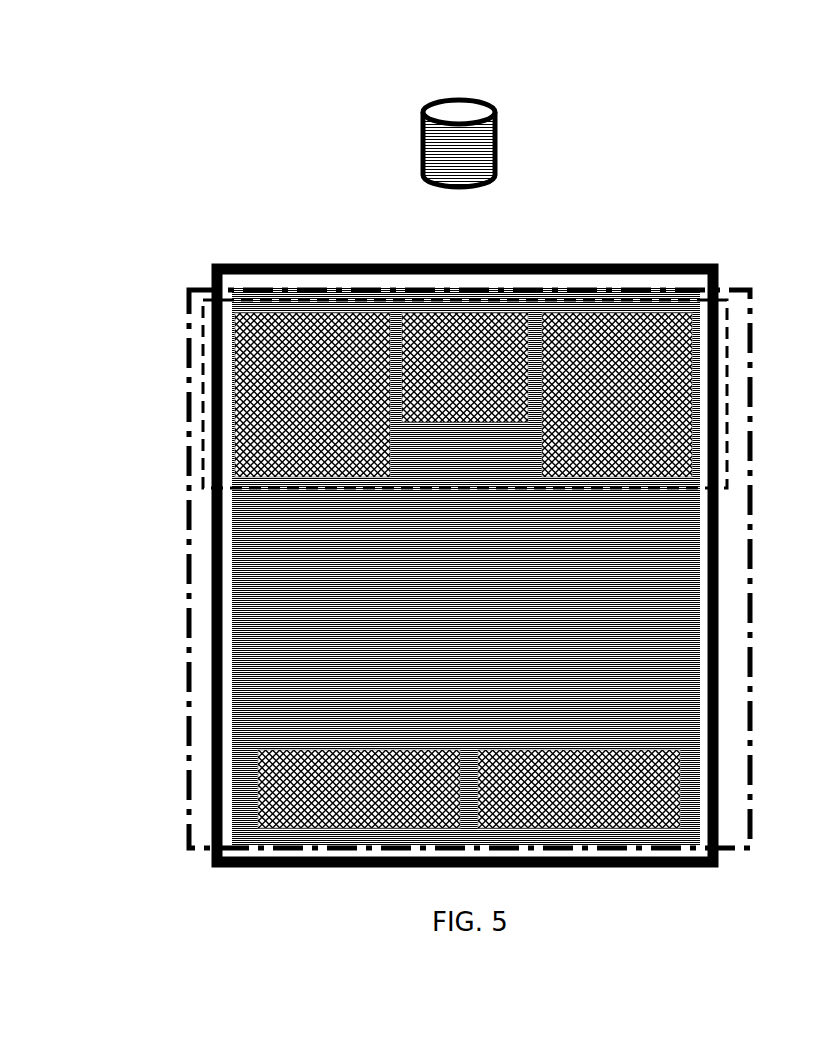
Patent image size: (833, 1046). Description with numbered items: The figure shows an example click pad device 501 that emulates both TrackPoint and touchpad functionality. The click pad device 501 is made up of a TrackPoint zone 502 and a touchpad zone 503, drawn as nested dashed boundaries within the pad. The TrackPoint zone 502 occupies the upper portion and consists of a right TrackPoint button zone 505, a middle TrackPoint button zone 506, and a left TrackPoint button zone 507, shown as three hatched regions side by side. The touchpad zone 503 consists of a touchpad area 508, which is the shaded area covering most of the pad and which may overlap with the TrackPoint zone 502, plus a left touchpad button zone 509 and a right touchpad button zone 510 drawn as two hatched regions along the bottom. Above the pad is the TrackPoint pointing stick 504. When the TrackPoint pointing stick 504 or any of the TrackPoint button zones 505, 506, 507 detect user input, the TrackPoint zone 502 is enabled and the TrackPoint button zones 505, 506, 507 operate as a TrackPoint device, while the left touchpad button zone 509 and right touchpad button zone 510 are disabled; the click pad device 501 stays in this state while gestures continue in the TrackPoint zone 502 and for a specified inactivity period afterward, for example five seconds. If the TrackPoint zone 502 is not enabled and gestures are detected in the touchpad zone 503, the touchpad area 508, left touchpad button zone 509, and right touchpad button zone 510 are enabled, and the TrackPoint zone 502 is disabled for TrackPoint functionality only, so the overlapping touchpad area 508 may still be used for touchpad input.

The click pad device 501 is at (134, 888).
The TrackPoint zone 502 is at (727, 380).
The touchpad zone 503 is at (742, 292).
The TrackPoint pointing stick 504 is at (487, 93).
The right TrackPoint button zone 505 is at (295, 325).
The middle TrackPoint button zone 506 is at (440, 320).
The left TrackPoint button zone 507 is at (610, 325).
The touchpad area 508 is at (688, 610).
The left touchpad button zone 509 is at (315, 815).
The right touchpad button zone 510 is at (660, 828).